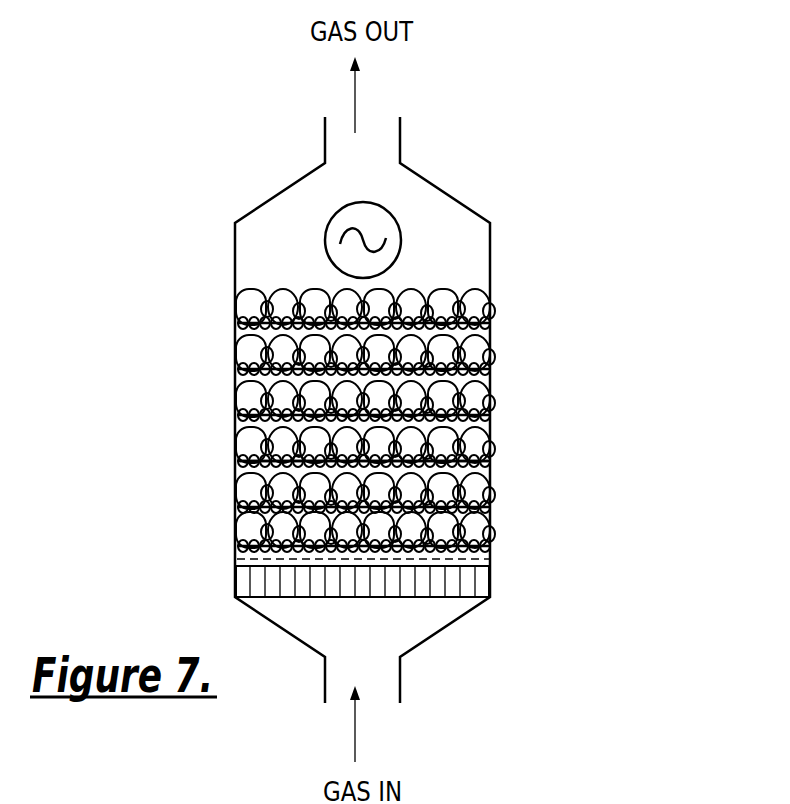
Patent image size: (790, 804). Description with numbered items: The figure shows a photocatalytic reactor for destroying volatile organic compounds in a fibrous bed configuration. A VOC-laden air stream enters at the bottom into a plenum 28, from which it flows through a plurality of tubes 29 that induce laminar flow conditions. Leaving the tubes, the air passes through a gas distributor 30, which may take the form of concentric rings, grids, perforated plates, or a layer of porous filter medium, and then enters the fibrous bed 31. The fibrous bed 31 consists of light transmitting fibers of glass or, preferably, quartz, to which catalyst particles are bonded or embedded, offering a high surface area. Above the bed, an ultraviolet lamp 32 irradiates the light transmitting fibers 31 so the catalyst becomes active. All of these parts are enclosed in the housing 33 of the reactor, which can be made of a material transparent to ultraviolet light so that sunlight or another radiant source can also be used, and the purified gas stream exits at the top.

The plenum 28 is at (385, 612).
The tubes 29 is at (460, 582).
The gas distributor 30 is at (490, 508).
The fibrous bed of light transmitting fibers 31 is at (440, 445).
The ultraviolet lamp 32 is at (400, 252).
The housing 33 is at (237, 388).